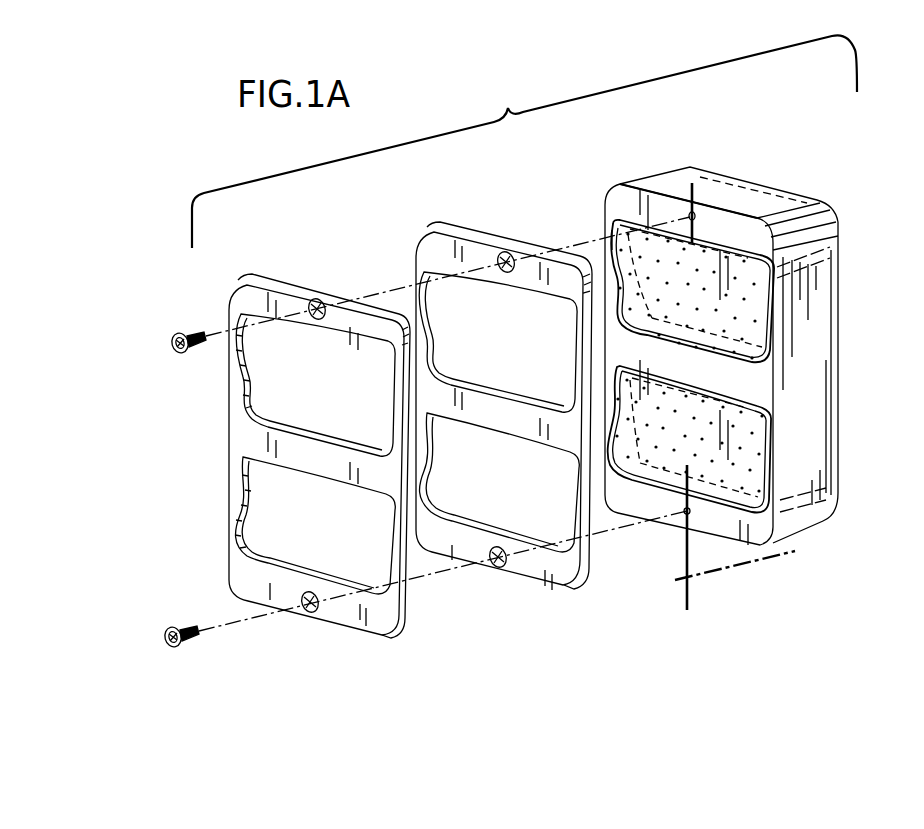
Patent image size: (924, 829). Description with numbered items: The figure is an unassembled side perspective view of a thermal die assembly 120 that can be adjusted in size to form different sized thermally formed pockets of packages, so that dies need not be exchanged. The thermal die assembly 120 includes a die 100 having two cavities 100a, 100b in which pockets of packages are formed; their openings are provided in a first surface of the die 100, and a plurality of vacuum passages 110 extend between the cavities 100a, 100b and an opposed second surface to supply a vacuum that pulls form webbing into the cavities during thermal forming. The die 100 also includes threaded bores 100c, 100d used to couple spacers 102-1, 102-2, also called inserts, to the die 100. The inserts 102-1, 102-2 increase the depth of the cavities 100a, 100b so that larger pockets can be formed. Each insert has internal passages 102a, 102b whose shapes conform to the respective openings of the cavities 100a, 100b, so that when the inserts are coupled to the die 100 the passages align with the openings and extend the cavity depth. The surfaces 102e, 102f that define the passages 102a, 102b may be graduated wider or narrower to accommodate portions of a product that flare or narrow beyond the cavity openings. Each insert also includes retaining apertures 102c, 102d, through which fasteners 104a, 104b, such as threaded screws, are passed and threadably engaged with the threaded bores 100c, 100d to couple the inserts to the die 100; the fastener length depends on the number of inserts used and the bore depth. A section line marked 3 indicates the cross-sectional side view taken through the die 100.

The thermal die assembly 120 is at (508, 106).
The die 100 is at (759, 349).
The cavity 100a is at (760, 293).
The cavity 100b is at (758, 435).
The threaded bore 100c is at (690, 212).
The threaded bore 100d is at (685, 513).
The vacuum passages 110 is at (760, 350).
The spacer 102-1 is at (472, 240).
The spacer 102-2 is at (288, 287).
The internal passage 102a is at (263, 333).
The internal passage 102b is at (380, 572).
The retaining aperture 102c is at (318, 299).
The retaining aperture 102d is at (310, 612).
The surface 102e is at (250, 356).
The surface 102f is at (245, 512).
The fastener 104a is at (180, 334).
The fastener 104b is at (180, 643).
The section line 3- 3 is at (813, 160).